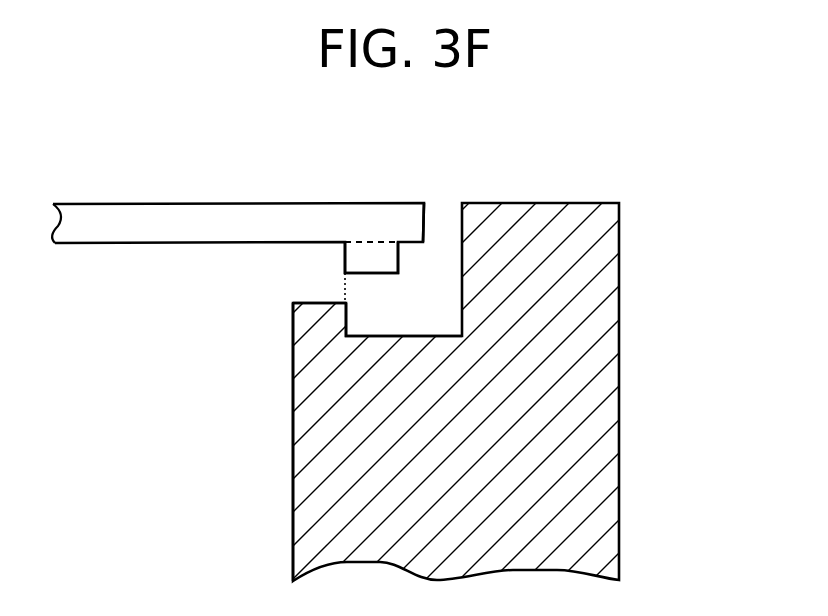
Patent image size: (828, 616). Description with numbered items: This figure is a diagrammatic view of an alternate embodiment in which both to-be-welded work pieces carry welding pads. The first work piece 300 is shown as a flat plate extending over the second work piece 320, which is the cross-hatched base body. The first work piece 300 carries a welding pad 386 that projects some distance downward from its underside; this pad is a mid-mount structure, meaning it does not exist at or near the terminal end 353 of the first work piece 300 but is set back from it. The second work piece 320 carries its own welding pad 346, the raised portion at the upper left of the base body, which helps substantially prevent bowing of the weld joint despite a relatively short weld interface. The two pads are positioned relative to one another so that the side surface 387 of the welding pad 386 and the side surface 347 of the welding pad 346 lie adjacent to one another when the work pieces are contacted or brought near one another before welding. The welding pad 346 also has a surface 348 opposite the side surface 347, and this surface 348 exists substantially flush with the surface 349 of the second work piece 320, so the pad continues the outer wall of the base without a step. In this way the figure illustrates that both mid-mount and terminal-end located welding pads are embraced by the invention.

The first work piece 300 is at (90, 204).
The terminal end 353 is at (425, 223).
The side surface 387 is at (343, 253).
The welding pad 386 is at (363, 262).
The side surface 347 is at (347, 320).
The surface 348 is at (293, 322).
The welding pad 346 is at (317, 322).
The surface 349 is at (293, 462).
The second work piece 320 is at (619, 343).